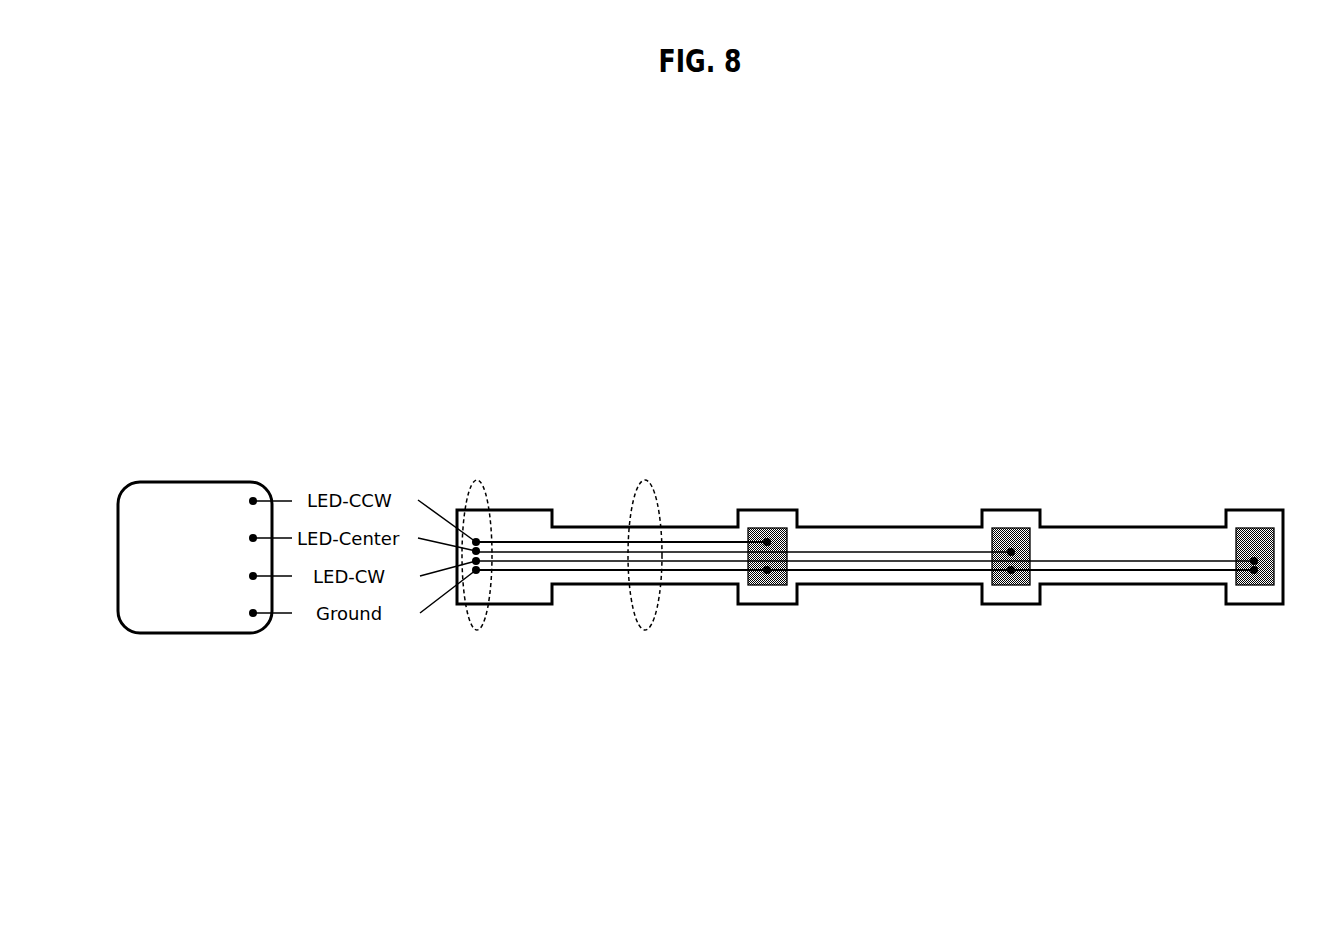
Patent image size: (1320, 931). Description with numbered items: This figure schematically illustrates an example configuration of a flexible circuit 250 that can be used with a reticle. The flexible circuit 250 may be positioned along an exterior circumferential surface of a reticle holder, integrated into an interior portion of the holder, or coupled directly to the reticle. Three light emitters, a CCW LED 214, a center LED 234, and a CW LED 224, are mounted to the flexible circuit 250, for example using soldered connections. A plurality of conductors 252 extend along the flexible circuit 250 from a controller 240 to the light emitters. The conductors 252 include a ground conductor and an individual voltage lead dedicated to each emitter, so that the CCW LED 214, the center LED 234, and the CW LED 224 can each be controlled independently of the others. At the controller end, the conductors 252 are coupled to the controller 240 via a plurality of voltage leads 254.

The controller 240 is at (205, 557).
The flexible circuit 250 is at (920, 585).
The conductors 252 is at (647, 632).
The voltage leads 254 is at (478, 632).
The CCW LED 214 is at (767, 542).
The center LED 234 is at (1011, 550).
The CW LED 224 is at (1254, 558).